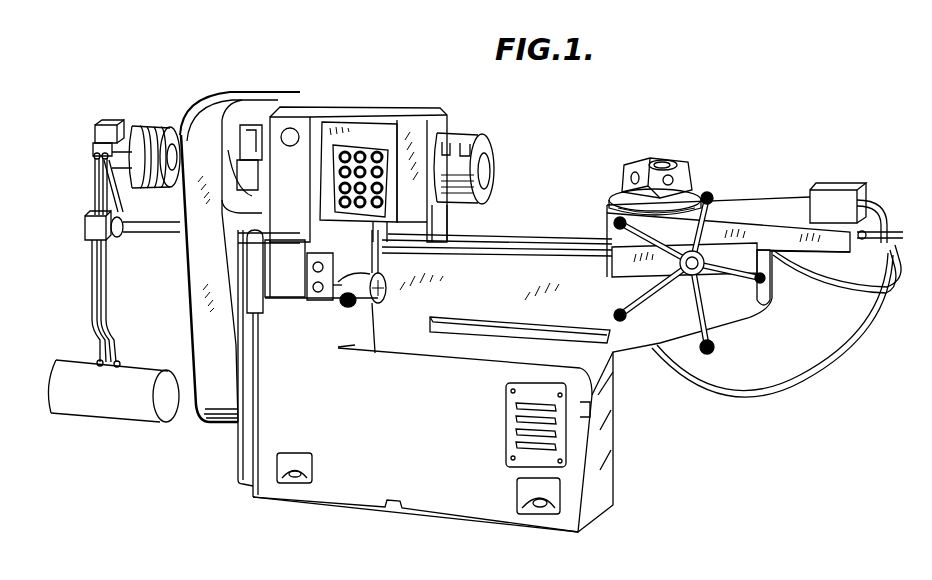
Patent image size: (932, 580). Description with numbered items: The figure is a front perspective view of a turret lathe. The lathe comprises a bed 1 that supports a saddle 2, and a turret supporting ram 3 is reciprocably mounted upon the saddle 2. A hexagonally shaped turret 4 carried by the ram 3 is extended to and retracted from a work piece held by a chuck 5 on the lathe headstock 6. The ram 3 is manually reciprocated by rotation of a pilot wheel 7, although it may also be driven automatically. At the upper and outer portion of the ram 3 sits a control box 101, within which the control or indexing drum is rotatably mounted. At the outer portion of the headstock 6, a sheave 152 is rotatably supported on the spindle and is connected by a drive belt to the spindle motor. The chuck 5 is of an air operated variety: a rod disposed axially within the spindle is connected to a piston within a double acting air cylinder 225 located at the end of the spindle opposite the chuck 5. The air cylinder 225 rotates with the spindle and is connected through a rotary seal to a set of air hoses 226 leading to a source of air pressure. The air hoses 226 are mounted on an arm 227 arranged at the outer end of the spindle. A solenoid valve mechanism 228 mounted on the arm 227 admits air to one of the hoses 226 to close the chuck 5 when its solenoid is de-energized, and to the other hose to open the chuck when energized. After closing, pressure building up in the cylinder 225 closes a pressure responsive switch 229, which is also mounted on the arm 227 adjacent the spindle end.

The bed 1 is at (518, 252).
The saddle 2 is at (627, 269).
The ram 3 is at (770, 209).
The turret 4 is at (672, 160).
The chuck 5 is at (490, 148).
The headstock 6 is at (323, 112).
The pilot wheel 7 is at (690, 290).
The control box 101 is at (842, 185).
The sheave 152 is at (236, 218).
The air cylinder 225 is at (157, 128).
The air hoses 226 is at (98, 278).
The arm 227 is at (120, 190).
The solenoid valve mechanism 228 is at (85, 226).
The pressure responsive switch 229 is at (98, 124).